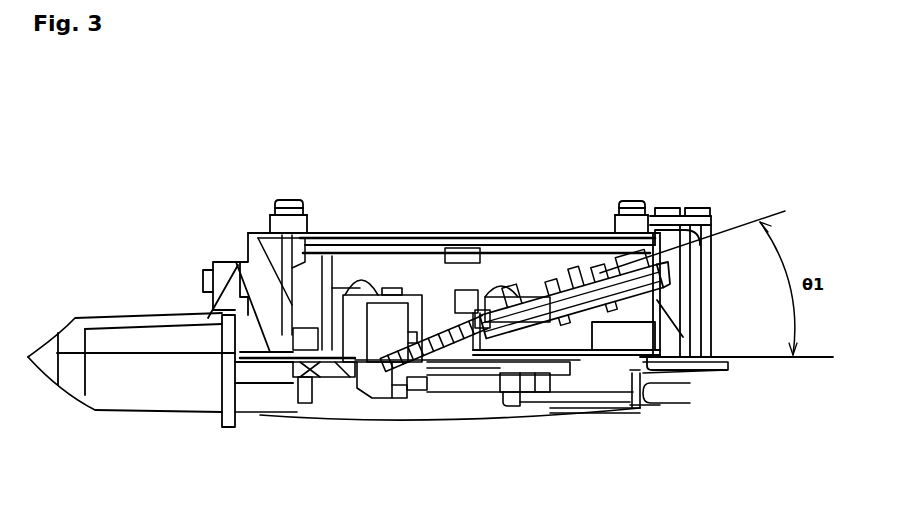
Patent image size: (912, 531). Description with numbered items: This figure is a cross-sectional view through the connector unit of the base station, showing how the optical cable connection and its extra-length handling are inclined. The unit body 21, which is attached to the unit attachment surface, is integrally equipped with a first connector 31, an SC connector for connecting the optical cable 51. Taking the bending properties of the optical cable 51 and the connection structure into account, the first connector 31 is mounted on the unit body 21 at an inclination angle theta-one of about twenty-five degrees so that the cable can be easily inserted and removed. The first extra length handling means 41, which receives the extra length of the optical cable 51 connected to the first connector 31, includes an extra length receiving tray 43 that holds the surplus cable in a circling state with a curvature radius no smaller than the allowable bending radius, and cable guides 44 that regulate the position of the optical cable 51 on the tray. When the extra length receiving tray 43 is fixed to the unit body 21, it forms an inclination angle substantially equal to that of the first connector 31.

The unit body 21 is at (645, 405).
The first connector 31 is at (395, 357).
The first extra length handling means 41 is at (575, 239).
The extra length receiving tray 43 is at (574, 281).
The cable guides 44 is at (611, 245).
The optical cable 51 is at (445, 330).